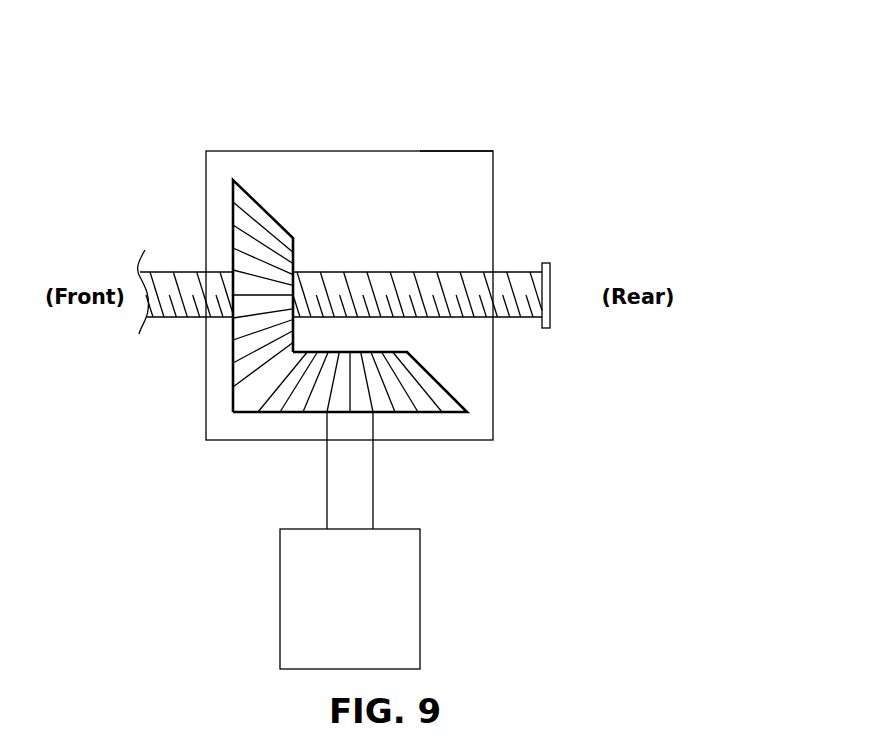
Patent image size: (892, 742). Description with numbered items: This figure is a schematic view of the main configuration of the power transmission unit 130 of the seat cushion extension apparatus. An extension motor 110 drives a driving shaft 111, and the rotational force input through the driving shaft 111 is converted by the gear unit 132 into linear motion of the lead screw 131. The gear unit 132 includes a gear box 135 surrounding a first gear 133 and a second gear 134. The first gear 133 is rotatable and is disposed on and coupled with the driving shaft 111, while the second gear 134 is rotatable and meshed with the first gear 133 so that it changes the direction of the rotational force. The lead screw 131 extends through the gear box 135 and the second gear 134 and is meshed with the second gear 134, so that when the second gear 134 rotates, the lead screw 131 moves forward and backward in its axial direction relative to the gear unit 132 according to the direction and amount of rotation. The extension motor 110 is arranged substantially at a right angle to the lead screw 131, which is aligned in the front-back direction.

The extension motor 110 is at (420, 587).
The driving shaft 111 is at (362, 495).
The power transmission unit 130 is at (533, 140).
The lead screw 131 is at (180, 320).
The gear unit 132 is at (333, 150).
The first gear 133 is at (433, 390).
The second gear 134 is at (260, 237).
The gear box 135 is at (450, 150).